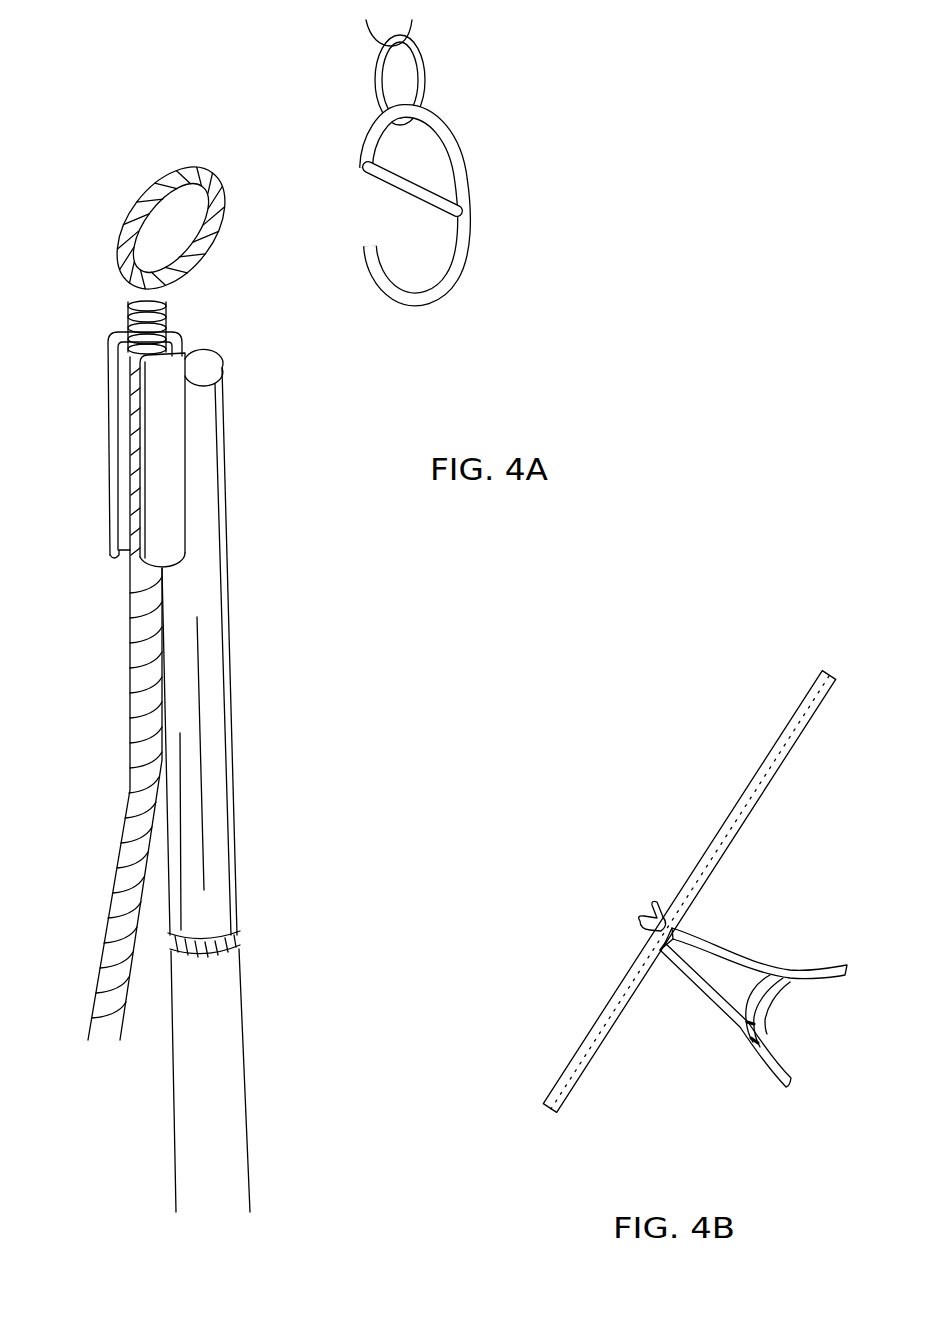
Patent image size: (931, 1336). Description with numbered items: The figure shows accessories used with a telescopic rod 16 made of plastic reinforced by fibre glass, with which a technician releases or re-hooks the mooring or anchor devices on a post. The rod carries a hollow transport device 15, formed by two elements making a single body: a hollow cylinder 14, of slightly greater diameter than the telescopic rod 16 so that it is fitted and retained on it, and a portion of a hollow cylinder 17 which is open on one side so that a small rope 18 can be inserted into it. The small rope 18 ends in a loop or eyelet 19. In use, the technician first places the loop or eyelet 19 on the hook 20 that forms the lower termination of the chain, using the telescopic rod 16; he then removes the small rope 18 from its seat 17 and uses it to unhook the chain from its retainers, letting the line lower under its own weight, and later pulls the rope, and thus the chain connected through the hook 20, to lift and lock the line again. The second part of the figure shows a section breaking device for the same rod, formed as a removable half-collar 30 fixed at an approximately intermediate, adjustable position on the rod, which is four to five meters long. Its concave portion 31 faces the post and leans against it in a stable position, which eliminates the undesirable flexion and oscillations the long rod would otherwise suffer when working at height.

In FIG. 4A, the hollow cylinder 14 is at (213, 353).
In FIG. 4A, the hollow transport device 15 is at (203, 578).
In FIG. 4A, the telescopic rod 16 is at (190, 1120).
In FIG. 4A, the portion of a hollow cylinder 17 is at (124, 483).
In FIG. 4A, the small rope 18 is at (141, 723).
In FIG. 4A, the loop or eyelet 19 is at (148, 214).
In FIG. 4A, the hook 20 is at (472, 248).
In FIG. 4B, the removable half-collar 30 is at (741, 1023).
In FIG. 4B, the concave portion 31 is at (767, 1003).